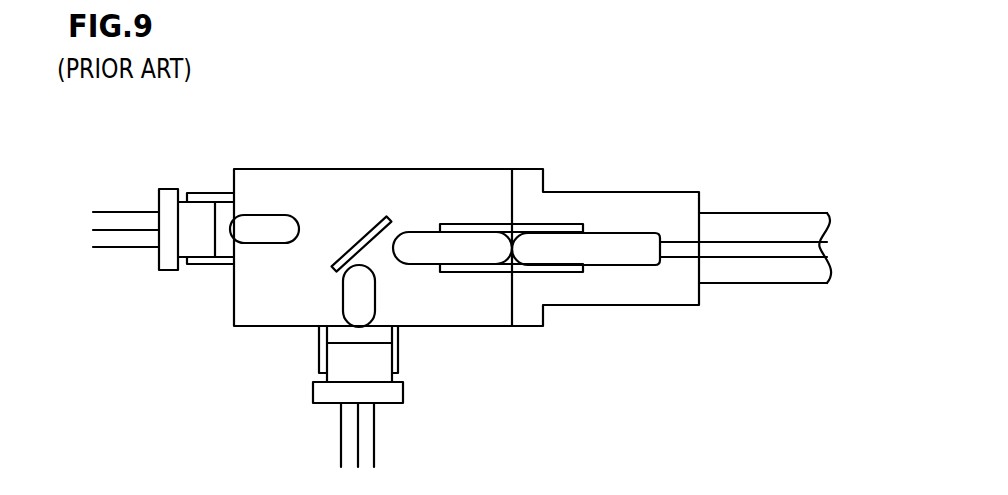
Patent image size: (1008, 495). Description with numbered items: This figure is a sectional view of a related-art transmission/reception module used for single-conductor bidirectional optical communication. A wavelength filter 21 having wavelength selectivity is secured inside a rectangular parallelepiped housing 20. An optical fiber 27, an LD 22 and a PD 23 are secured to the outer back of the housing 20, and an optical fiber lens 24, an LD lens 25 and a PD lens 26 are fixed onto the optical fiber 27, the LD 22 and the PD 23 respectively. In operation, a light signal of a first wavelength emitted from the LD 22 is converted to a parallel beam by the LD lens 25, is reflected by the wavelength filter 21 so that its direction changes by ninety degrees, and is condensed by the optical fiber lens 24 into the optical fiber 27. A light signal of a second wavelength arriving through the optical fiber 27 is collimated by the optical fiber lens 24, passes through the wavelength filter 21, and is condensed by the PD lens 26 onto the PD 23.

The housing 20 is at (353, 169).
The wavelength filter 21 is at (390, 216).
The LD 22 is at (403, 390).
The PD 23 is at (166, 189).
The optical fiber lens 24 is at (415, 265).
The LD lens 25 is at (347, 297).
The PD lens 26 is at (263, 215).
The optical fiber 27 is at (745, 248).